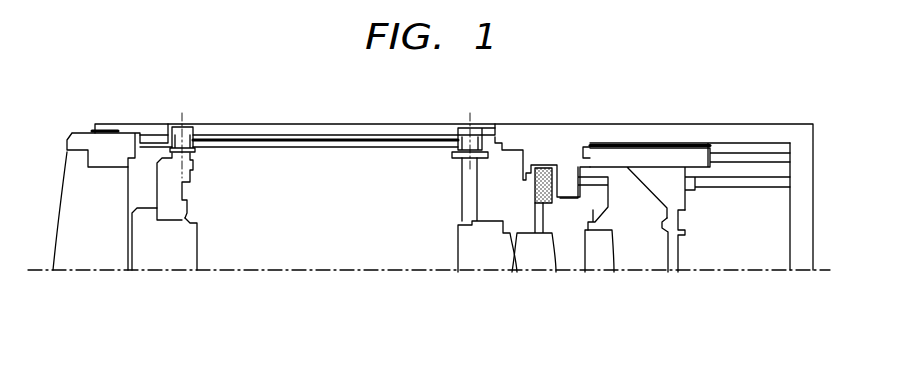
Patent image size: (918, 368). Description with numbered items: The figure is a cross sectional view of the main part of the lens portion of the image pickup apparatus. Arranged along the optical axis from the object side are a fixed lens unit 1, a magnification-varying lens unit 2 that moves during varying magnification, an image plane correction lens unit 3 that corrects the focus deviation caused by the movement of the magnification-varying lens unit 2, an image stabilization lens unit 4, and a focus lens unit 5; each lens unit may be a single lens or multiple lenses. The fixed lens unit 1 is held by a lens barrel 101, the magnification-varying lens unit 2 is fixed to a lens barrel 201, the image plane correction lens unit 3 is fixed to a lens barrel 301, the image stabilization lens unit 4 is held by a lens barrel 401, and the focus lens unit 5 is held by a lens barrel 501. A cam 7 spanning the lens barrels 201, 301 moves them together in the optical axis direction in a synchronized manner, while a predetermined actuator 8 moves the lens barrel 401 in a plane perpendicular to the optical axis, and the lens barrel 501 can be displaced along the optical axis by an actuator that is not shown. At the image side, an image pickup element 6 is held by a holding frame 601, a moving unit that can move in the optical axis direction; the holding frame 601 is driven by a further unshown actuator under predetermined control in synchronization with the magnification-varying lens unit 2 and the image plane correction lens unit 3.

The fixed lens unit 1 is at (92, 262).
The magnification-varying lens unit 2 is at (165, 262).
The image plane correction lens unit 3 is at (482, 262).
The image stabilization lens unit 4 is at (537, 262).
The focus lens unit 5 is at (598, 262).
The image pickup element 6 is at (673, 262).
The cam 7 is at (309, 136).
The actuator 8 is at (548, 166).
The lens barrel 101 is at (91, 147).
The lens barrel 201 is at (170, 170).
The lens barrel 301 is at (466, 189).
The lens barrel 401 is at (521, 206).
The lens barrel 501 is at (617, 194).
The holding frame 601 is at (667, 166).